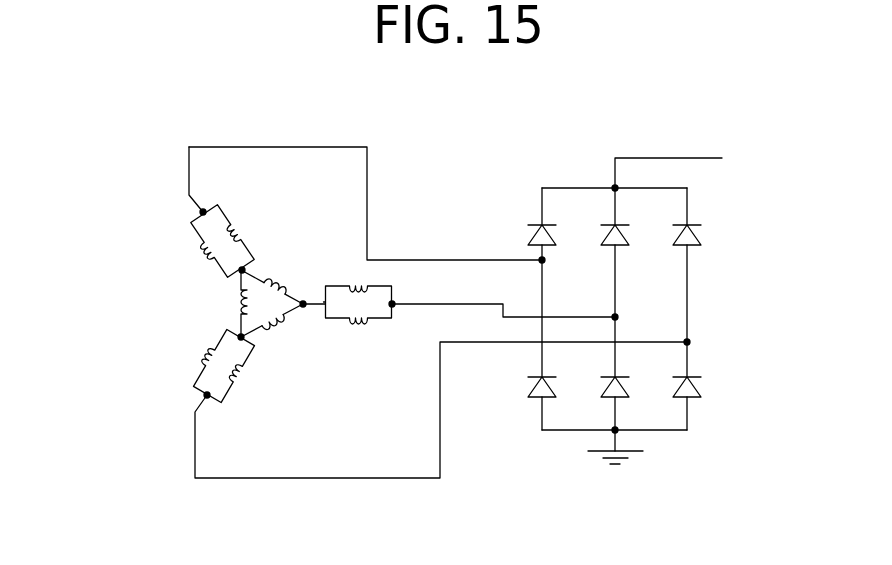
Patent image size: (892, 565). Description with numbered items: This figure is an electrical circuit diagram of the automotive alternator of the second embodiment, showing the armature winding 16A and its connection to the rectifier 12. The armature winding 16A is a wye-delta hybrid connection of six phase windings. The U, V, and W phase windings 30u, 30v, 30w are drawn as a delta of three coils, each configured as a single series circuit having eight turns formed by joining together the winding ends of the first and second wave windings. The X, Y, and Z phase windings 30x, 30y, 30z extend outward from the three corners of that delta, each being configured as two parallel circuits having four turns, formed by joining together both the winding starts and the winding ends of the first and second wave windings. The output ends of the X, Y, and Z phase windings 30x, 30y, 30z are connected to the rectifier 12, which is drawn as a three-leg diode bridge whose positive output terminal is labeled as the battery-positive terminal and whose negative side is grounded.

The armature winding 16A is at (163, 268).
The rectifier 12 is at (573, 168).
The X phase winding 30x is at (232, 242).
The Y phase winding 30y is at (360, 322).
The Z phase winding 30z is at (232, 365).
The U phase winding 30u is at (216, 303).
The V phase winding 30v is at (277, 282).
The W phase winding 30w is at (272, 334).